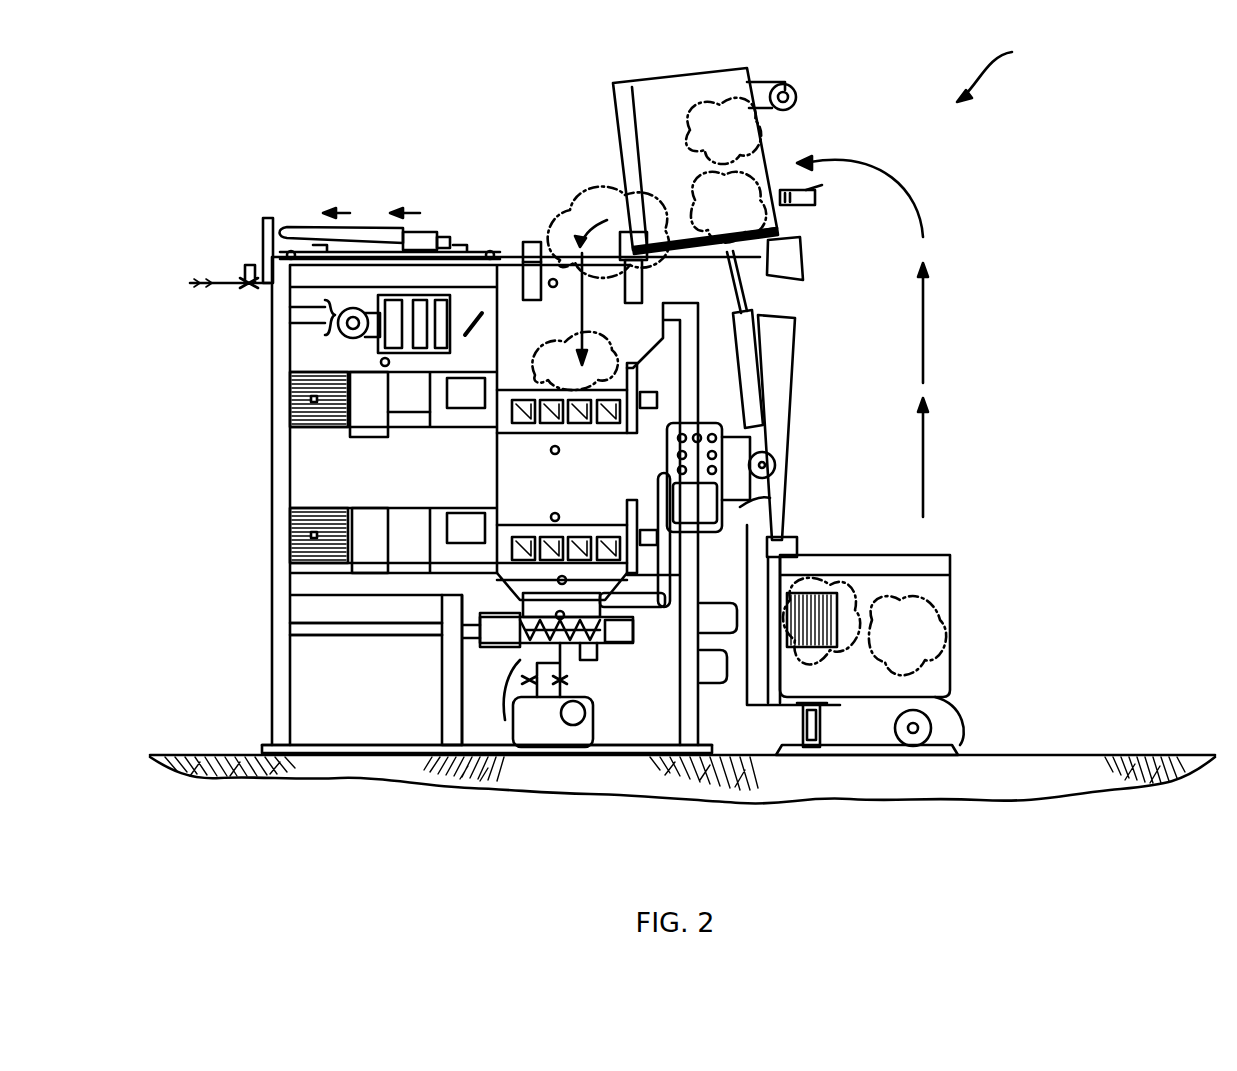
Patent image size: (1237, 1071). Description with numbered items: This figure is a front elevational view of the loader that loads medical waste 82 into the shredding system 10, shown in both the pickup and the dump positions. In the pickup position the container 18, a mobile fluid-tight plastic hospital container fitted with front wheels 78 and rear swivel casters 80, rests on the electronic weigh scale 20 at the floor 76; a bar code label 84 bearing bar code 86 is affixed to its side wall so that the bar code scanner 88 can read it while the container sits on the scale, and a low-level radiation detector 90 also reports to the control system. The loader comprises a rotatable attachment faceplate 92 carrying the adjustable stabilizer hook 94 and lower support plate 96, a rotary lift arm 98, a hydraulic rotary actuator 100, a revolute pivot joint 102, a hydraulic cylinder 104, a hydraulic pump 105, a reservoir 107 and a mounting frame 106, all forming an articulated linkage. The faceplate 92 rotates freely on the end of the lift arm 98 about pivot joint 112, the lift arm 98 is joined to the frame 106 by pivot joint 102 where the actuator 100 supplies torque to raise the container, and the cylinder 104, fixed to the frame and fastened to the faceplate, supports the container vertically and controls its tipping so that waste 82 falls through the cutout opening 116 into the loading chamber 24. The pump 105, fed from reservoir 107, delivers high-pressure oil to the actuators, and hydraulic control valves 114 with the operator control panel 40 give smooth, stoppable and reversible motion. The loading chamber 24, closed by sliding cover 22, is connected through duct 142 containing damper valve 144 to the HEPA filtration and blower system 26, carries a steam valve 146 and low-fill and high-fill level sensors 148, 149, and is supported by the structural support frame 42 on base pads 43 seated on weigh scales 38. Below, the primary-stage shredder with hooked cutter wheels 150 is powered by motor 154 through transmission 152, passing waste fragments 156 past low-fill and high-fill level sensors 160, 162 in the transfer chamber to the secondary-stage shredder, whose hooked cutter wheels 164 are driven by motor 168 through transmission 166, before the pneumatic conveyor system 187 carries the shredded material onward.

The shredding system 10 is at (1002, 68).
The container 18 is at (667, 73).
The weigh scale 20 is at (862, 750).
The sliding cover 22 is at (458, 297).
The loading chamber 24 is at (535, 240).
The HEPA filtration and blower system 26 is at (388, 298).
The weigh scale 38 is at (342, 750).
The operator control panel 40 is at (700, 423).
The structural support frame 42 is at (270, 693).
The base pad 43 is at (440, 745).
The floor 76 is at (1158, 790).
The front wheel 78 is at (800, 98).
The rear swivel caster 80 is at (817, 190).
The medical waste 82 is at (748, 75).
The bar code label 84 is at (790, 607).
The bar code 86 is at (845, 630).
The bar code scanner 88 is at (717, 627).
The low-level radiation detector 90 is at (713, 667).
The rotatable attachment faceplate 92 is at (778, 273).
The adjustable stabilizer hook 94 is at (810, 548).
The lower support plate 96 is at (780, 222).
The rotary lift arm 98 is at (765, 519).
The hydraulic rotary actuator 100 is at (776, 418).
The revolute pivot joint 102 is at (775, 465).
The hydraulic cylinder 104 is at (750, 335).
The hydraulic pump 105 is at (586, 715).
The mounting frame 106 is at (740, 507).
The reservoir 107 is at (578, 737).
The pivot joint 112 is at (800, 243).
The hydraulic control valve 114 is at (530, 697).
The cutout opening 116 is at (556, 247).
The duct 142 is at (433, 297).
The damper valve 144 is at (507, 315).
The steam valve 146 is at (243, 265).
The low-fill level sensor 148 is at (385, 362).
The high-fill level sensor 149 is at (557, 283).
The hooked cutter wheel 150 is at (603, 417).
The transmission 152 is at (430, 428).
The motor 154 is at (367, 406).
The waste fragments 156 is at (560, 497).
The low-fill level sensor 160 is at (551, 517).
The high-fill level sensor 162 is at (551, 450).
The hooked cutter wheel 164 is at (525, 594).
The transmission 166 is at (515, 555).
The motor 168 is at (398, 545).
The pneumatic conveyor system 187 is at (520, 660).